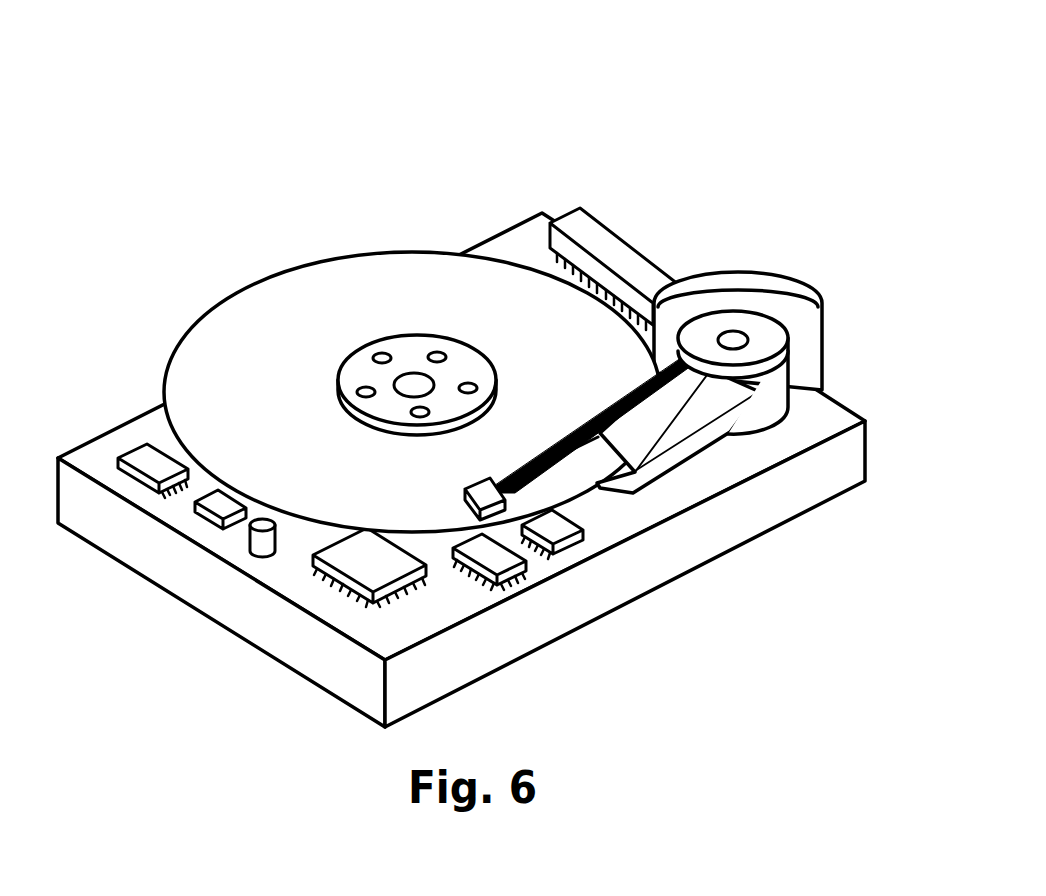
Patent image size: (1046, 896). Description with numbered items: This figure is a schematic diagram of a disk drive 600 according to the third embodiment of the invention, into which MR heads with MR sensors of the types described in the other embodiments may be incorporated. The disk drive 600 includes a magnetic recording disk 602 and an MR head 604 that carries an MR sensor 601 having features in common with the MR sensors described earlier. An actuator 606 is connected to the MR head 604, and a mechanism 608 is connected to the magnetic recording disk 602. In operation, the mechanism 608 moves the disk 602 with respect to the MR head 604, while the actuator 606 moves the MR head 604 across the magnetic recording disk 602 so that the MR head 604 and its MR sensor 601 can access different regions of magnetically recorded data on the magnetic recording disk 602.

The disk drive 600 is at (643, 123).
The MR sensor 601 is at (468, 506).
The magnetic recording disk 602 is at (242, 413).
The MR head 604 is at (485, 508).
The actuator 606 is at (705, 398).
The mechanism 608 is at (412, 382).